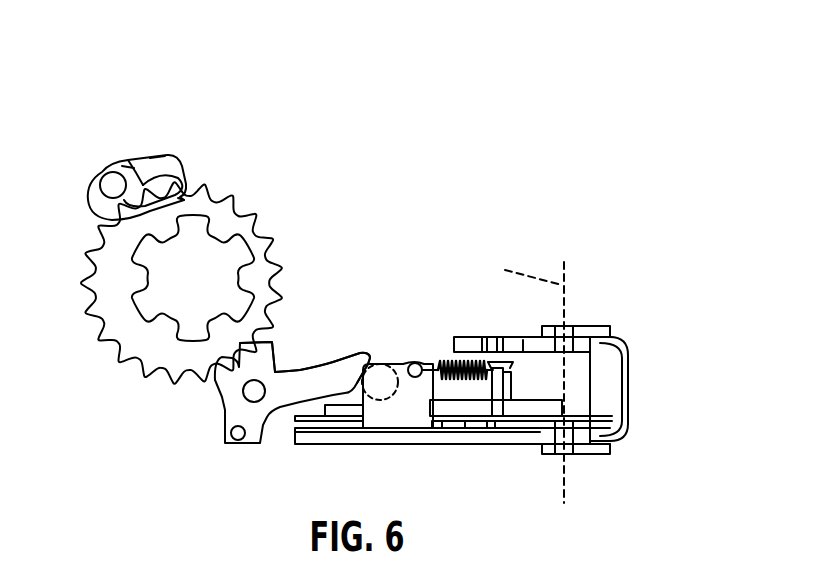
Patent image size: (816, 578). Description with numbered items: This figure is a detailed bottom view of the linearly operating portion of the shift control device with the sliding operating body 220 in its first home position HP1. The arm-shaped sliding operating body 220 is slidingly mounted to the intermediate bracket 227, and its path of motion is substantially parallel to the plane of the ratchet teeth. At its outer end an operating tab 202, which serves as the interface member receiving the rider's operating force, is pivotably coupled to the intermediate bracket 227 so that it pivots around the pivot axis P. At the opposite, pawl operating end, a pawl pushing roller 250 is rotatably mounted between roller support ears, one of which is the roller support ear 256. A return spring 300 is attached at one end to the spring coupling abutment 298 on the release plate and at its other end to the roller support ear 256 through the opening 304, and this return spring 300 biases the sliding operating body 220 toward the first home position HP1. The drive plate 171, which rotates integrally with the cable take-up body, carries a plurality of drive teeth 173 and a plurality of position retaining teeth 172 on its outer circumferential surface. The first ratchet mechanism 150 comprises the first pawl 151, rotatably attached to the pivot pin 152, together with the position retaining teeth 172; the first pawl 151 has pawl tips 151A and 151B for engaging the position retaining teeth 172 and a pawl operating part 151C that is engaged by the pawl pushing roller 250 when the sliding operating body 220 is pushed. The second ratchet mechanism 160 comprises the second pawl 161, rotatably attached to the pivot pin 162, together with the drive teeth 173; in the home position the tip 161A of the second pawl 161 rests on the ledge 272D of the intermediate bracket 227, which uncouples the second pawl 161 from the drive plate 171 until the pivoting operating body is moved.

The first ratchet mechanism 150 is at (256, 388).
The first pawl 151 is at (290, 377).
The pawl tip 151A is at (214, 401).
The pawl tip 151B is at (269, 364).
The pawl operating part 151C is at (348, 388).
The pivot pin 152 is at (266, 418).
The second ratchet mechanism 160 is at (152, 147).
The second pawl 161 is at (128, 167).
The tip of pawl 161A is at (157, 156).
The pivot pin 162 is at (105, 186).
The drive plate 171 is at (290, 253).
The position retaining teeth 172 is at (122, 359).
The drive teeth 173 is at (252, 200).
The operating tab 202 is at (629, 394).
The sliding operating body 220 is at (570, 403).
The intermediate bracket 227 is at (397, 424).
The pawl pushing roller 250 is at (381, 376).
The roller support ear 256 is at (384, 367).
The ledge 272D is at (184, 200).
The spring coupling abutment 298 is at (504, 385).
The return spring 300 is at (445, 361).
The opening 304 is at (416, 363).
The first home position HP1 is at (623, 323).
The pivot axis P is at (530, 266).